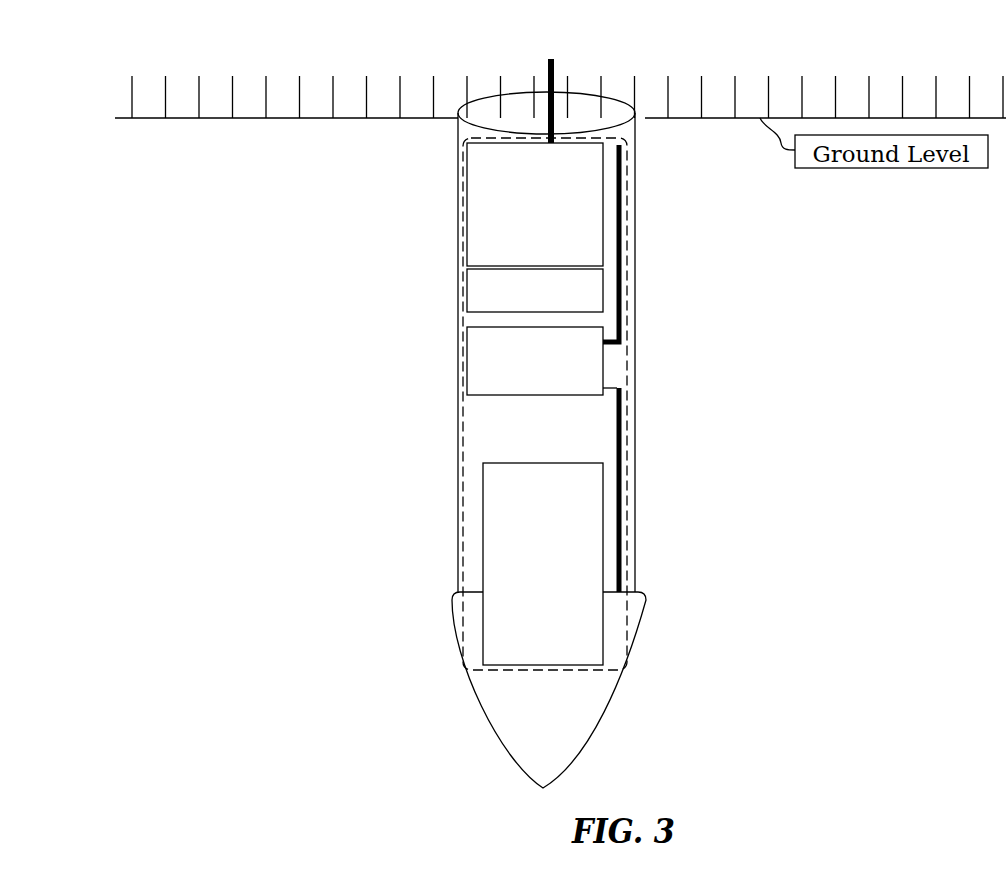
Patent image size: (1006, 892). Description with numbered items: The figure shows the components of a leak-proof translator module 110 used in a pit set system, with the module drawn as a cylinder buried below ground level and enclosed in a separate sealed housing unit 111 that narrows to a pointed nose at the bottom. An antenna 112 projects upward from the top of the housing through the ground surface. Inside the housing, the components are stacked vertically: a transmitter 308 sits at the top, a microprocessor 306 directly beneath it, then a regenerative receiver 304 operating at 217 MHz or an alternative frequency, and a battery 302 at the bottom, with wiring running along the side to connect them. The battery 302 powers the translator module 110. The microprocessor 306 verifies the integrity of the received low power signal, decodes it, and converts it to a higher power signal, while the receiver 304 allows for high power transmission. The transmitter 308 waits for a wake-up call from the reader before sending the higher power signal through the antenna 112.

The translator module 110 is at (462, 615).
The sealed housing unit 111 is at (611, 703).
The antenna 112 is at (553, 70).
The regenerative receiver 217 is at (535, 361).
The battery 302 is at (543, 564).
The regenerative receiver 304 is at (535, 361).
The microprocessor 306 is at (535, 290).
The transmitter 308 is at (535, 204).